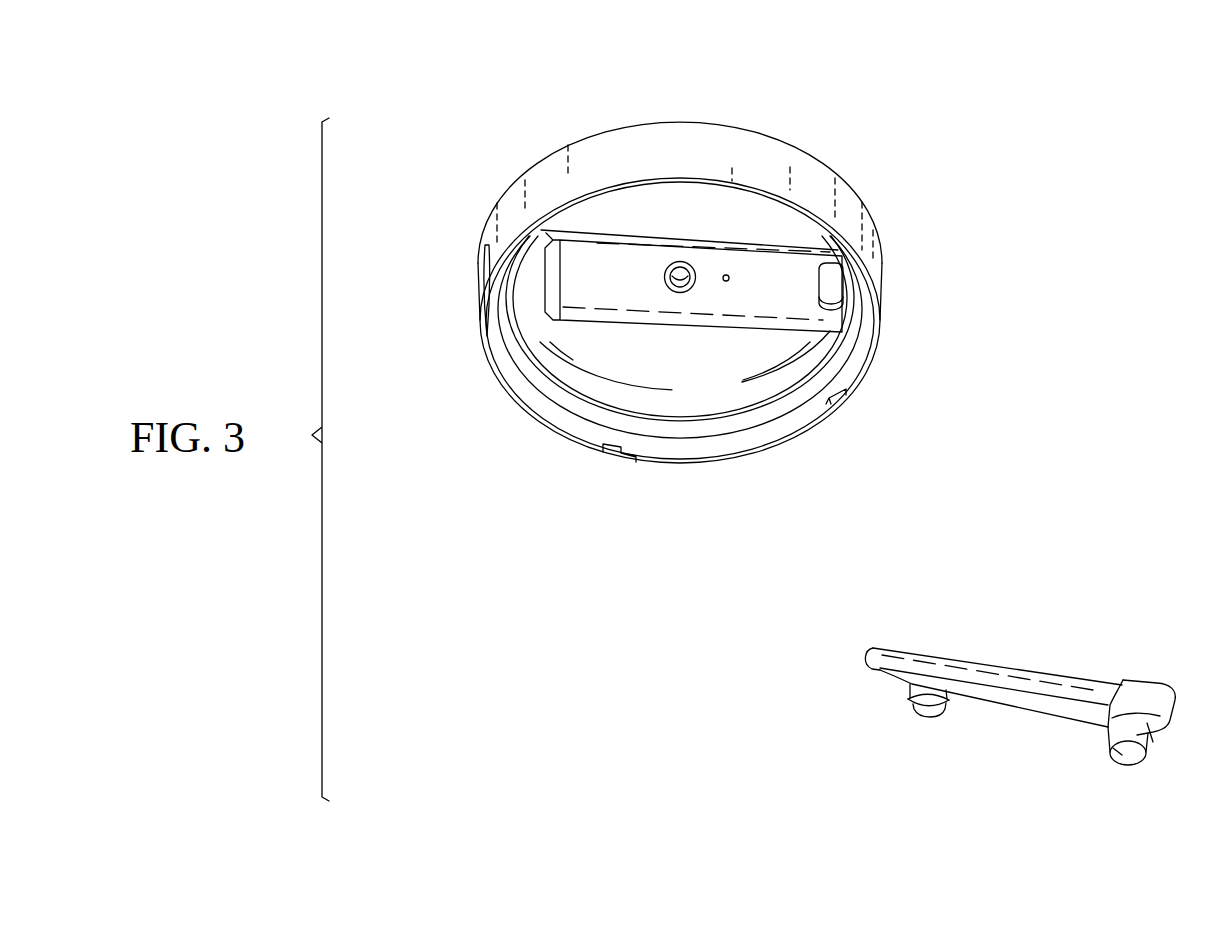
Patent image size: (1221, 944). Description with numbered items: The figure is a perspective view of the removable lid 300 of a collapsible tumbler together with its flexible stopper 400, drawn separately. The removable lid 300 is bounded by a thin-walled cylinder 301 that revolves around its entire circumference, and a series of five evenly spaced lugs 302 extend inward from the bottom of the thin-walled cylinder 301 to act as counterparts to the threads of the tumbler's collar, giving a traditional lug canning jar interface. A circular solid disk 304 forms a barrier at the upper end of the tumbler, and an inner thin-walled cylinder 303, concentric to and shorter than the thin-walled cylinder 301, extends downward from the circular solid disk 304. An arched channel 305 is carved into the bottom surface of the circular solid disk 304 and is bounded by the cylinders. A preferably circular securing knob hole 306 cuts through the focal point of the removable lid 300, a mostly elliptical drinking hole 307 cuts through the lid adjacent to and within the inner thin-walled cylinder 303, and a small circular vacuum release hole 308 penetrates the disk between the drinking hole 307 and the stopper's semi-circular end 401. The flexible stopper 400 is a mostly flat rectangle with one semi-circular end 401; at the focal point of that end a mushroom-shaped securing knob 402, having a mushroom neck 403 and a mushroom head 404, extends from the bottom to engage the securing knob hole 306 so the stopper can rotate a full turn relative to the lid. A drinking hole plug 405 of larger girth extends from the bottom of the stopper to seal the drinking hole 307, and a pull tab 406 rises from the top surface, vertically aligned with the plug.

The removable lid 300 is at (496, 183).
The thin-walled cylinder 301 is at (530, 407).
The lugs 302 is at (615, 456).
The inner thin-walled cylinder 303 is at (528, 359).
The circular solid disk 304 is at (767, 347).
The arched channel 305 is at (492, 296).
The securing knob hole 306 is at (673, 268).
The drinking hole 307 is at (832, 276).
The vacuum release hole 308 is at (726, 272).
The flexible stopper 400 is at (995, 685).
The semi-circular end 401 is at (925, 663).
The securing knob 402 is at (948, 707).
The mushroom neck 403 is at (908, 697).
The mushroom head 404 is at (908, 702).
The drinking hole plug 405 is at (1117, 752).
The pull tab 406 is at (1148, 690).